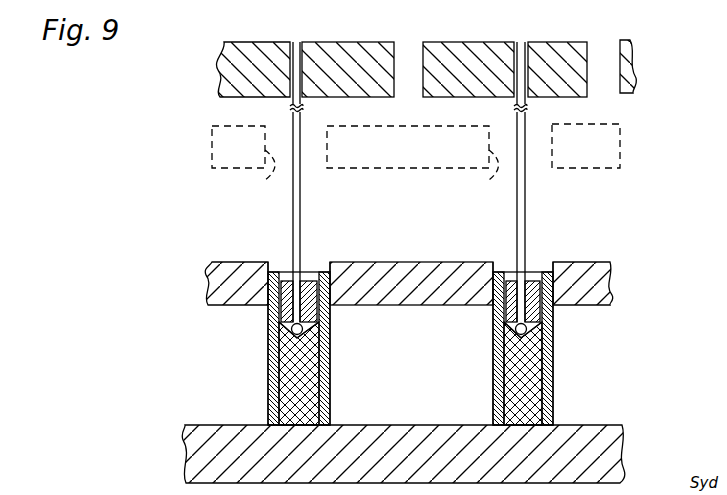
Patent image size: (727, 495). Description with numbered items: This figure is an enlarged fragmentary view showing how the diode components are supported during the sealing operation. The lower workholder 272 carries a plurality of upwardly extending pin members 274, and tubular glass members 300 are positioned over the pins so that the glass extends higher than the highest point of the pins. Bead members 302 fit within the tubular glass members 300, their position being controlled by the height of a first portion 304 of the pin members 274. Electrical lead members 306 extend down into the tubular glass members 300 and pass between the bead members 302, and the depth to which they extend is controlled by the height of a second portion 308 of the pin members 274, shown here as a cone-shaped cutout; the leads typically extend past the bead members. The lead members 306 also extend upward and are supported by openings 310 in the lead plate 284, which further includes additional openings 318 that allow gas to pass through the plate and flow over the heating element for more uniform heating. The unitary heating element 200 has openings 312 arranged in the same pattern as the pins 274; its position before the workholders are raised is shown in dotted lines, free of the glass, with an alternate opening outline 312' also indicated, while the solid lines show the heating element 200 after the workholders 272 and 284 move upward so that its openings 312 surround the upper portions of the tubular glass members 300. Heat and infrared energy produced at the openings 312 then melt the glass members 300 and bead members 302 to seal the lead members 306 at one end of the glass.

The lead plate 284 is at (272, 28).
The additional openings 318 is at (590, 50).
The openings 310 is at (300, 58).
The electrical lead members 306 is at (300, 226).
The unitary heating element 200 is at (232, 160).
The openings 312 is at (433, 211).
The slot in plate (alternate position) 312' is at (480, 189).
The tubular glass members 300 is at (328, 386).
The bead members 302 is at (312, 282).
The pin members 274 is at (292, 376).
The second portion 308 is at (282, 341).
The first portion 304 is at (313, 338).
The workholder 272 is at (214, 433).